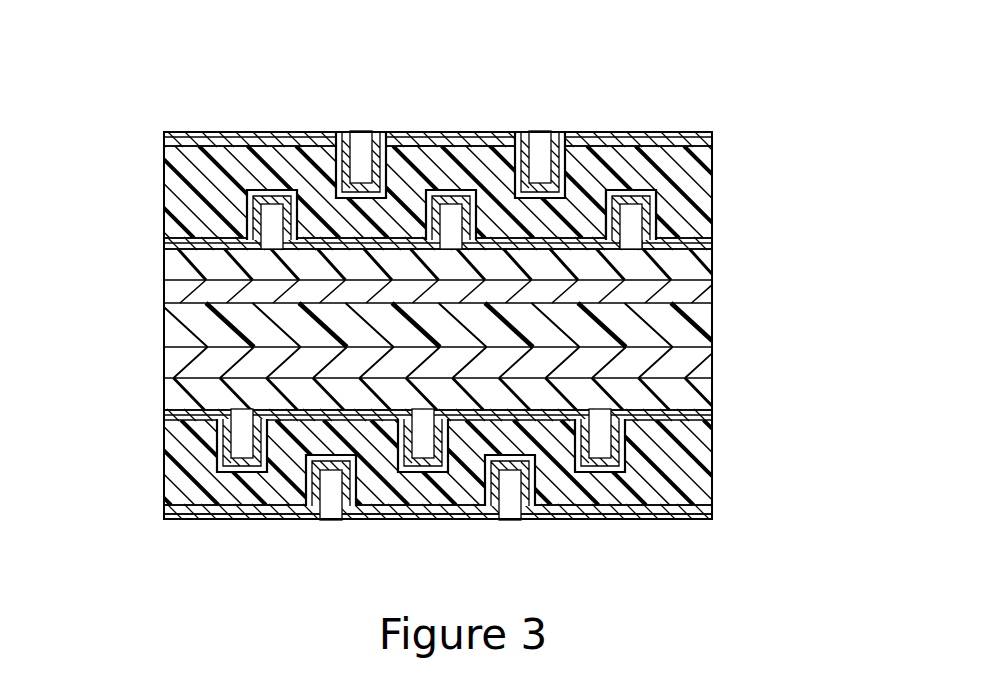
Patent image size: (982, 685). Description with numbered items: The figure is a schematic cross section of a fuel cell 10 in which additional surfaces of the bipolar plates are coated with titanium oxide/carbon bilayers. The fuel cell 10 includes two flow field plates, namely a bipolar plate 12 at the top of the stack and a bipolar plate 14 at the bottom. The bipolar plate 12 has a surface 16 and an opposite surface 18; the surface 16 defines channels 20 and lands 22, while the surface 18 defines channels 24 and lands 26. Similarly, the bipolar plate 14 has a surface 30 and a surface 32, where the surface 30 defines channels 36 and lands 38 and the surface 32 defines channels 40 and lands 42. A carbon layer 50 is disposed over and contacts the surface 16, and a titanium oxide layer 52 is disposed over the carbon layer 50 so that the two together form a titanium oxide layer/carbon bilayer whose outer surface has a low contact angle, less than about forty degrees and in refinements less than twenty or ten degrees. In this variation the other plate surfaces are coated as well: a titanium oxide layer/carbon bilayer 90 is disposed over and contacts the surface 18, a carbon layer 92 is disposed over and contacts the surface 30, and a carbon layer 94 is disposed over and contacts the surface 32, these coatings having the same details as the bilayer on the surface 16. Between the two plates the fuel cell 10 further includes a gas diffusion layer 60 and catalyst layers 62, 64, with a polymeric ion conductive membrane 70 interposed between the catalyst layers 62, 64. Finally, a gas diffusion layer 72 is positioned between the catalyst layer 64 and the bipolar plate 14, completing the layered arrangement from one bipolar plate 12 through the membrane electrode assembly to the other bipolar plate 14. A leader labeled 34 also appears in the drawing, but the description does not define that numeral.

The fuel cell 10 is at (650, 88).
The bipolar plate 12 is at (148, 150).
The bipolar plate 14 is at (175, 524).
The surface 16 is at (289, 172).
The surface 18 is at (480, 132).
The channels 20 is at (271, 220).
The lands 22 is at (365, 238).
The channels 24 is at (349, 150).
The lands 26 is at (417, 135).
The surface 30 is at (165, 413).
The surface 32 is at (190, 508).
The via 34 is at (602, 437).
The channels 36 is at (232, 432).
The lands 38 is at (383, 420).
The channels 40 is at (332, 487).
The lands 42 is at (250, 507).
The carbon layer 50 is at (165, 242).
The titanium oxide layer 52 is at (650, 220).
The gas diffusion layer 60 is at (165, 268).
The catalyst layer 62 is at (710, 293).
The catalyst layer 64 is at (165, 360).
The polymeric ion conductive membrane 70 is at (710, 322).
The gas diffusion layer 72 is at (710, 388).
The titanium oxide layer/carbon bilayer 90 is at (203, 132).
The carbon layer 92 is at (716, 416).
The carbon layer 94 is at (716, 515).